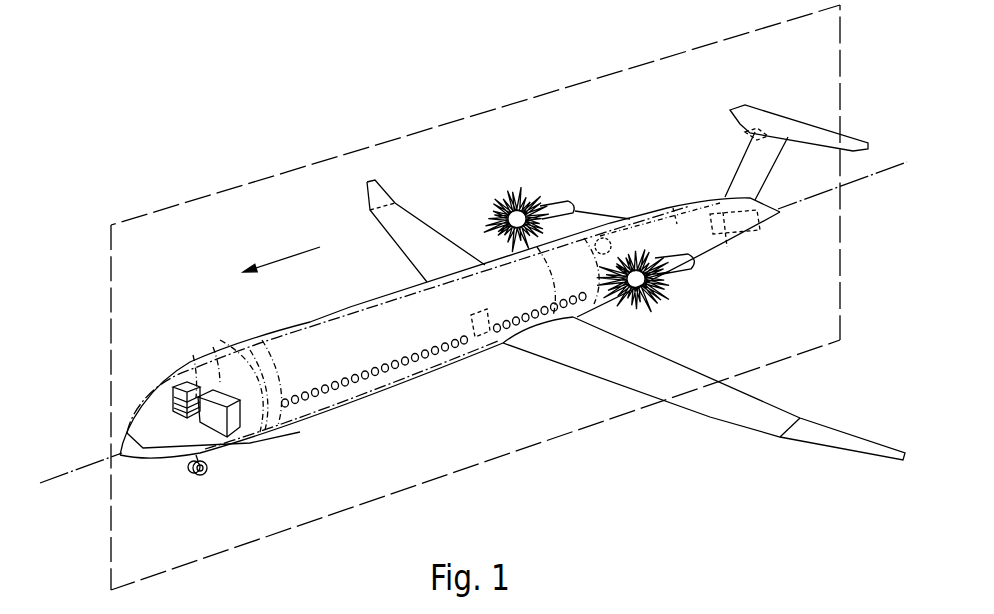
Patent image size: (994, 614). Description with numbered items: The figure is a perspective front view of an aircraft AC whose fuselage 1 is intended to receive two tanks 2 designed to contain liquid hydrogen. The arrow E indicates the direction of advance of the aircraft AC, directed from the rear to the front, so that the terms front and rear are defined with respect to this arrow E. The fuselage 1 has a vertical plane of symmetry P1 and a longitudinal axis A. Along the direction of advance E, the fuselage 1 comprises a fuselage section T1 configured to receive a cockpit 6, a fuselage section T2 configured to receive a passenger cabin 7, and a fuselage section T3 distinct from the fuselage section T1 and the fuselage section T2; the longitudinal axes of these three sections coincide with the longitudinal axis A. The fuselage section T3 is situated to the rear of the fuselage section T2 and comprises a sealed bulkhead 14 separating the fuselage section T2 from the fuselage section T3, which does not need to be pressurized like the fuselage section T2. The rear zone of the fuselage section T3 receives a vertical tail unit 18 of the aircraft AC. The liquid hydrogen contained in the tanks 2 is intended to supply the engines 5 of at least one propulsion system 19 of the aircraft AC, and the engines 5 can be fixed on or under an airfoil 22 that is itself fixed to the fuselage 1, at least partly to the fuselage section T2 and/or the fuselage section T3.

The fuselage 1 is at (420, 388).
The tank 2 is at (663, 201).
The engine 5 is at (520, 195).
The cockpit 6 is at (187, 362).
The passenger cabin 7 is at (348, 330).
The sealed bulkhead 14 is at (506, 250).
The vertical tail unit 18 is at (740, 175).
The propulsion system 19 is at (594, 186).
The airfoil 22 is at (395, 203).
The longitudinal axis A is at (80, 472).
The aircraft AC is at (249, 162).
The direction of advance E is at (281, 247).
The vertical plane of symmetry P1 is at (148, 215).
The fuselage section T1 is at (179, 462).
The fuselage section T2 is at (362, 400).
The fuselage section T3 is at (690, 292).